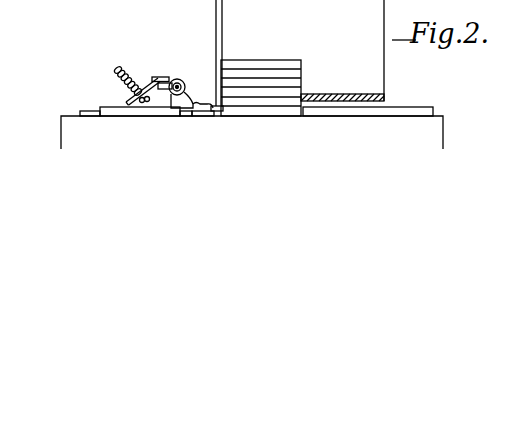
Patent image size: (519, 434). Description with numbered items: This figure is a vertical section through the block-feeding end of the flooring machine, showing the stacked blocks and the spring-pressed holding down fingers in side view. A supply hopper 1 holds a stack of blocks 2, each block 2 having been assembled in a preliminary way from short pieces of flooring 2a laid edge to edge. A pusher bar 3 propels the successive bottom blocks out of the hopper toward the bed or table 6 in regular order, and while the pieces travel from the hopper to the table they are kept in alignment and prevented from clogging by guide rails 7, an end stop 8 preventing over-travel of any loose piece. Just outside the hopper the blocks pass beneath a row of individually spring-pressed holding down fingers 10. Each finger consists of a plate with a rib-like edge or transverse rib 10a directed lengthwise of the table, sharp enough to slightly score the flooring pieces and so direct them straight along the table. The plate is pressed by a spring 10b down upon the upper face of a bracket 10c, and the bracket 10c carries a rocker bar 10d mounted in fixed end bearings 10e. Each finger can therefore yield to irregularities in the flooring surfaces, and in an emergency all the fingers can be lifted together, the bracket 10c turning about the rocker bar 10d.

The supply hopper 1 is at (222, 16).
The blocks 2 is at (247, 60).
The short pieces of flooring 2a is at (287, 63).
The pusher bar 3 is at (398, 108).
The bed or table 6 is at (68, 115).
The guide rails 7 is at (200, 117).
The end stop 8 is at (88, 117).
The holding down fingers 10 is at (127, 102).
The transverse ribs 10a is at (124, 105).
The spring 10b is at (133, 72).
The bracket 10c is at (157, 77).
The rocker bar 10d is at (174, 90).
The fixed end bearings 10e is at (181, 79).